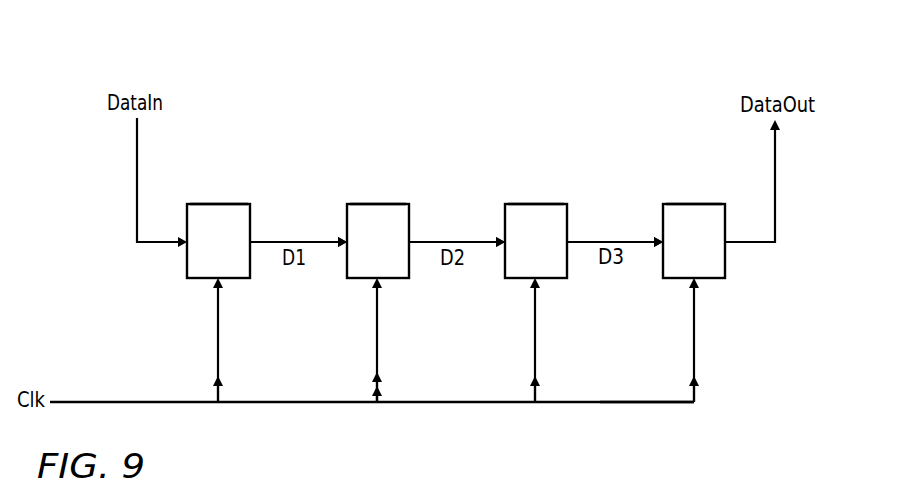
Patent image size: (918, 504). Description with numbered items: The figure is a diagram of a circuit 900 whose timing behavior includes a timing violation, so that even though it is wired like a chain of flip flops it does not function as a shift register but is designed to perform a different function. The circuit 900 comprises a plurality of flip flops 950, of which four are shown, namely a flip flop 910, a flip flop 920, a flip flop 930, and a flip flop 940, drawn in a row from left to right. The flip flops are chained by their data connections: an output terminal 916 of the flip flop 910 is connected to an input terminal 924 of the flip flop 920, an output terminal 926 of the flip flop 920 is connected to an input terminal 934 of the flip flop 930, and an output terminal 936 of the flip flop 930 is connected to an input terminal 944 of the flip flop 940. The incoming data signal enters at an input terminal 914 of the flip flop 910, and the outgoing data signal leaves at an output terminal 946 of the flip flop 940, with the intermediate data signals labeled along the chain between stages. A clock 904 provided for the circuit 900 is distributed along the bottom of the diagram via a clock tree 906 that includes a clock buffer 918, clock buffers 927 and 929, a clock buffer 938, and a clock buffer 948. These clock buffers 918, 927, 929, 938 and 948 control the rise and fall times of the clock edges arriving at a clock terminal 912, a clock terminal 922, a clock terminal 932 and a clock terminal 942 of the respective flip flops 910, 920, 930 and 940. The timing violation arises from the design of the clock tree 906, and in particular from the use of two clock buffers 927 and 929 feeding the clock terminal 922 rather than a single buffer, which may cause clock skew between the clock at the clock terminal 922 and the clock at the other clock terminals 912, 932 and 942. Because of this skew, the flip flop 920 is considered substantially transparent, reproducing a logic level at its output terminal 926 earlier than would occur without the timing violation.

The circuit 900 is at (797, 48).
The clock 904 is at (50, 402).
The clock tree 906 is at (620, 402).
The flip flop 910 is at (220, 204).
The clock terminal 912 is at (218, 283).
The input terminal 914 is at (186, 246).
The output terminal 916 is at (252, 236).
The clock buffer 918 is at (222, 391).
The flip flop 920 is at (378, 204).
The clock terminal 922 is at (377, 283).
The input terminal 924 is at (343, 238).
The output terminal 926 is at (410, 236).
The clock buffer 927 is at (383, 382).
The clock buffer 929 is at (383, 395).
The flip flop 930 is at (536, 204).
The clock terminal 932 is at (535, 283).
The input terminal 934 is at (502, 238).
The output terminal 936 is at (570, 236).
The clock buffer 938 is at (540, 390).
The flip flop 940 is at (694, 204).
The clock terminal 942 is at (694, 283).
The input terminal 944 is at (660, 238).
The output terminal 946 is at (726, 246).
The clock buffer 948 is at (698, 390).
The flip flops 950 is at (243, 204).